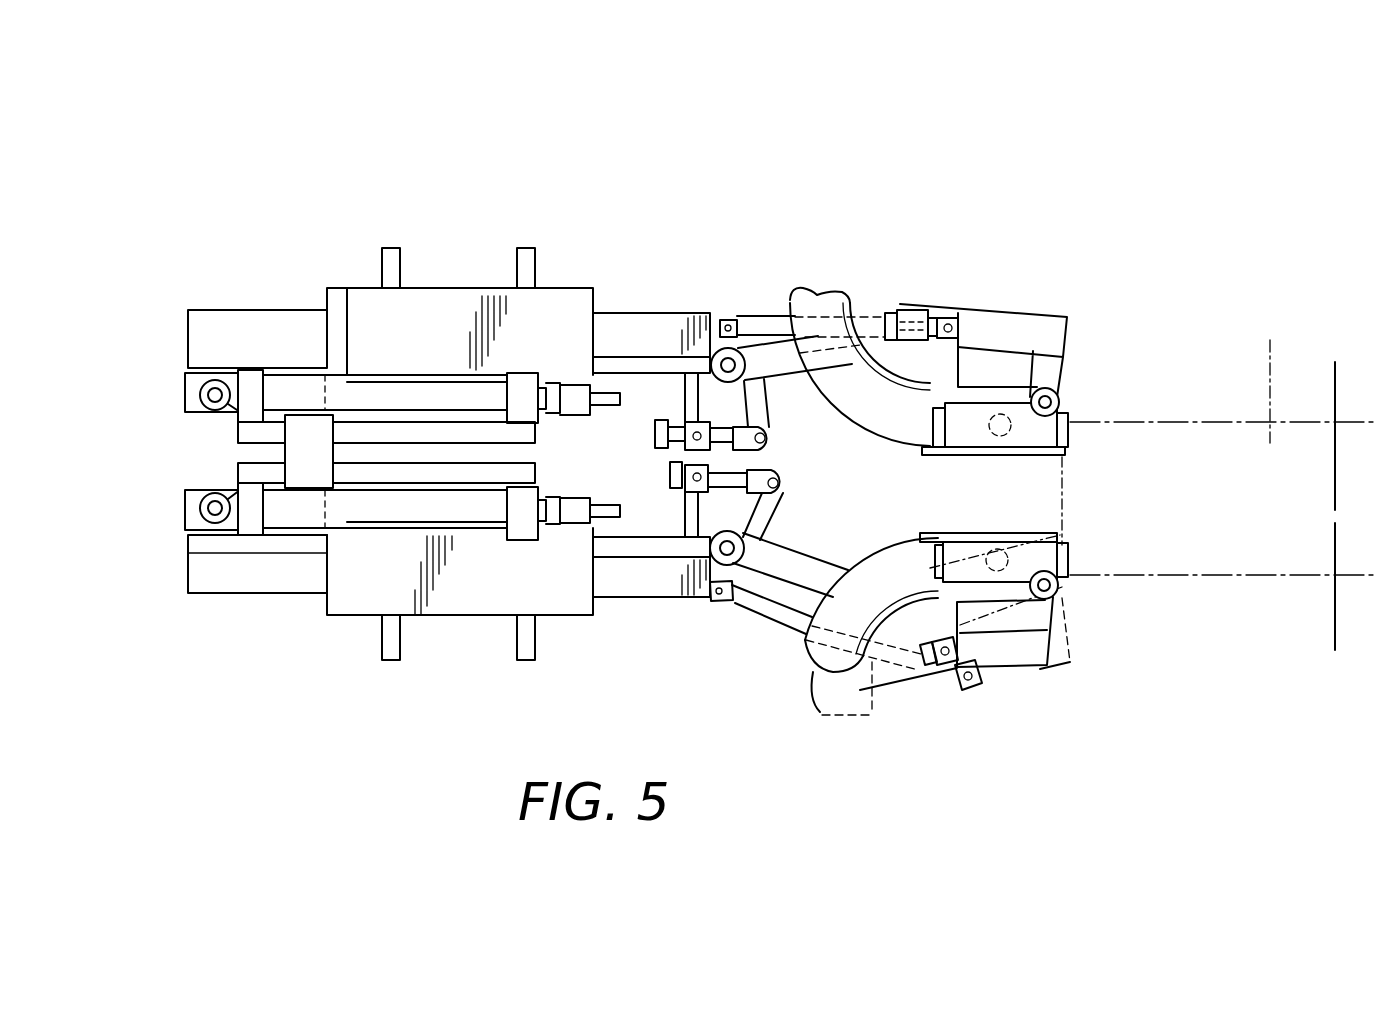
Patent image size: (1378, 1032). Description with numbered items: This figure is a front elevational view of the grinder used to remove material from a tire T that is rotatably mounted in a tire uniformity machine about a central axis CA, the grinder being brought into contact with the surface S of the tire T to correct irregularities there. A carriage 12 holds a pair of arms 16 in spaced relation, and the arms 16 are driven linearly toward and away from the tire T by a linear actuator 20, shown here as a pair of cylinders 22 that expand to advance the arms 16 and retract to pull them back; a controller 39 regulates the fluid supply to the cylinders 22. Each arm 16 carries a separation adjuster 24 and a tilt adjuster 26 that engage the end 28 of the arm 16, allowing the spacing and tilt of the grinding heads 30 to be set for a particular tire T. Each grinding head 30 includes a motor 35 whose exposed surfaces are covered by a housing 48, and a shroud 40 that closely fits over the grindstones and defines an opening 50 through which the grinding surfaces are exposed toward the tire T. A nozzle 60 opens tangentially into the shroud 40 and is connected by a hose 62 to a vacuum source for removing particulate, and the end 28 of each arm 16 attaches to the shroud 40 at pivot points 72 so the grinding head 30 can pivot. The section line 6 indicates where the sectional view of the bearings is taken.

The section line 6- 6 is at (140, 330).
The carriage 12 is at (452, 298).
The arm 16 is at (639, 325).
The linear actuator 20 is at (206, 480).
The cylinder 22 is at (298, 385).
The separation adjuster 24 is at (762, 403).
The tilt adjuster 26 is at (762, 318).
The end of arm 28 is at (793, 347).
The grinding head 30 is at (1068, 302).
The motor 35 is at (985, 352).
The controller 39 is at (322, 430).
The shroud 40 is at (955, 552).
The housing 48 is at (1017, 315).
The opening 50 is at (1070, 437).
The nozzle 60 is at (1000, 437).
The hose 62 is at (877, 373).
The pivot point 72 is at (1059, 400).
The surface of tire S is at (1128, 420).
The tire T is at (1265, 378).
The central axis CA is at (1335, 615).